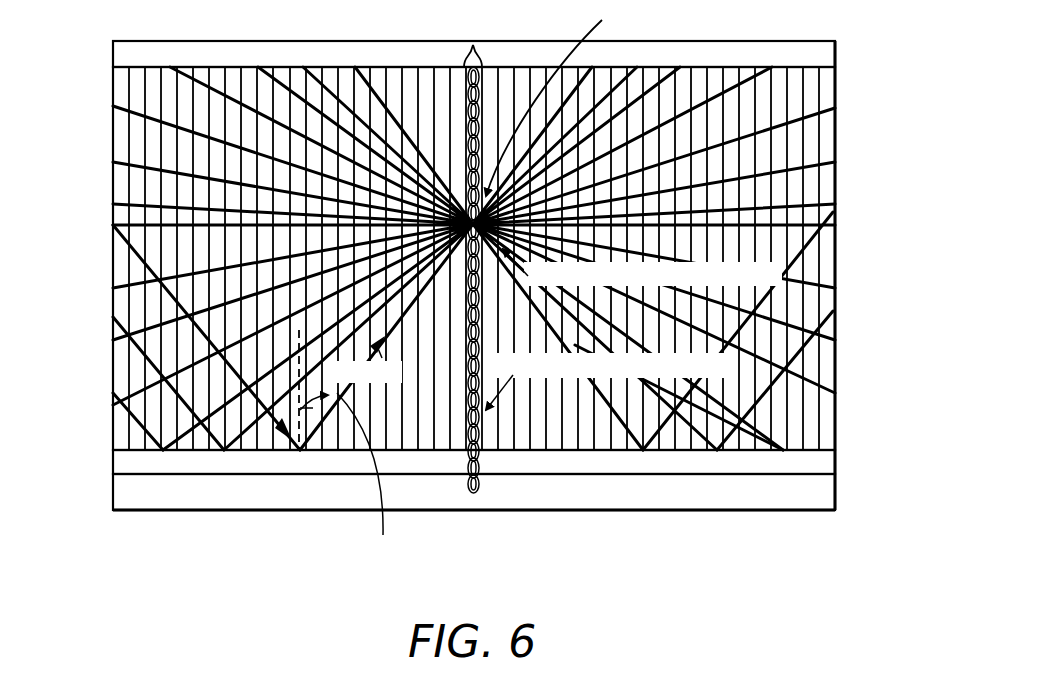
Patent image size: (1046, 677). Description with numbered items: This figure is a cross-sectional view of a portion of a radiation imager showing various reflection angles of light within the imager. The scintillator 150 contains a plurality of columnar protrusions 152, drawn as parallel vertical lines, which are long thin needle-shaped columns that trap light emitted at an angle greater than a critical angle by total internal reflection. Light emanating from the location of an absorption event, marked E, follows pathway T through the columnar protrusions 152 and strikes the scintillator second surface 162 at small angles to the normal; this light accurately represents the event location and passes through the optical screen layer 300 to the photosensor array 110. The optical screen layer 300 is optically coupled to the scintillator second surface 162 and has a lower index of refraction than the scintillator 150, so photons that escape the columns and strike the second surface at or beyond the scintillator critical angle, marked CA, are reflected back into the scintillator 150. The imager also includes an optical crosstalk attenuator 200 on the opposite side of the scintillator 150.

The optical crosstalk attenuator 200 is at (835, 58).
The scintillator 150 is at (472, 283).
The columnar protrusions 152 is at (491, 41).
The optical screen layer 300 is at (835, 458).
The photosensor array 110 is at (835, 498).
The scintillator second surface 162 is at (212, 446).